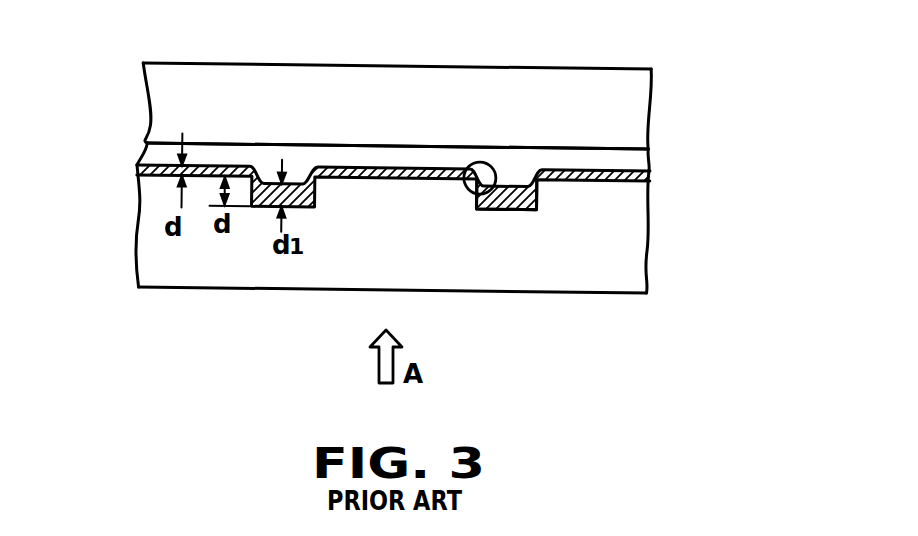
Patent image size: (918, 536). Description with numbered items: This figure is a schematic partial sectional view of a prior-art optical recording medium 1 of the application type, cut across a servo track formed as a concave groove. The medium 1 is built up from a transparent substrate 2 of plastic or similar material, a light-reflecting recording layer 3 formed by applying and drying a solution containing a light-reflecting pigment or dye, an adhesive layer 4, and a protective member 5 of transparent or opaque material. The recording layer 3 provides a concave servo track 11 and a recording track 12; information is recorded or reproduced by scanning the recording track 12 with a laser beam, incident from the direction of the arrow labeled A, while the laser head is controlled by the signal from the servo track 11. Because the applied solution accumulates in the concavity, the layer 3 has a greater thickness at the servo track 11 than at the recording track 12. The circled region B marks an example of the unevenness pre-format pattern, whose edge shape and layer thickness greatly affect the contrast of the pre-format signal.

The optical recording medium 1 is at (491, 66).
The transparent substrate 2 is at (630, 258).
The light-reflecting recording layer 3 is at (630, 177).
The adhesive layer 4 is at (633, 162).
The protective member 5 is at (627, 108).
The servo track 11 is at (510, 211).
The recording track 12 is at (385, 181).
The unevenness pre-format pattern B is at (467, 190).